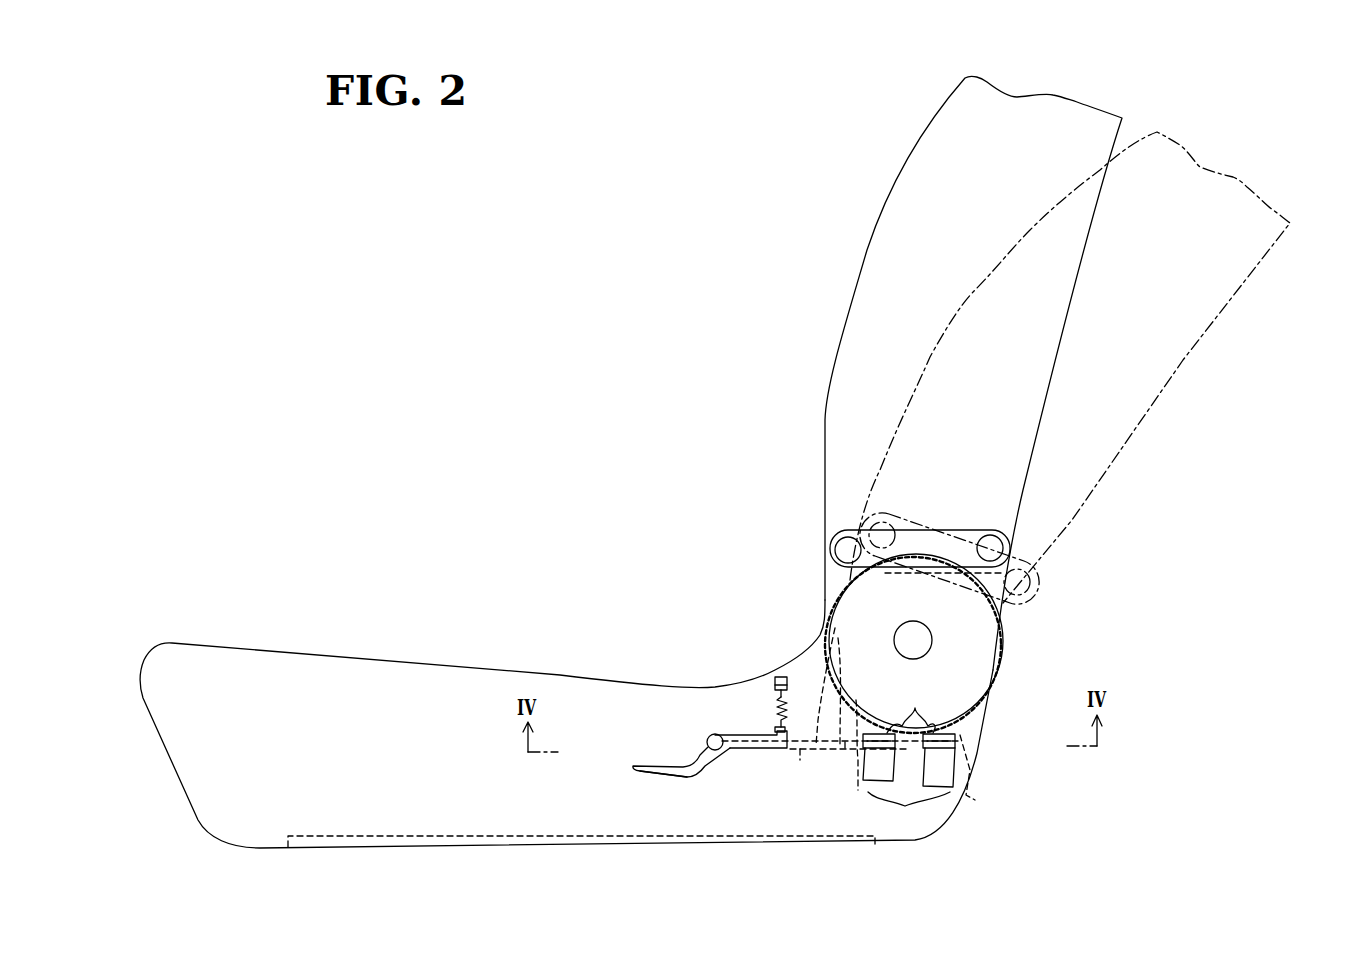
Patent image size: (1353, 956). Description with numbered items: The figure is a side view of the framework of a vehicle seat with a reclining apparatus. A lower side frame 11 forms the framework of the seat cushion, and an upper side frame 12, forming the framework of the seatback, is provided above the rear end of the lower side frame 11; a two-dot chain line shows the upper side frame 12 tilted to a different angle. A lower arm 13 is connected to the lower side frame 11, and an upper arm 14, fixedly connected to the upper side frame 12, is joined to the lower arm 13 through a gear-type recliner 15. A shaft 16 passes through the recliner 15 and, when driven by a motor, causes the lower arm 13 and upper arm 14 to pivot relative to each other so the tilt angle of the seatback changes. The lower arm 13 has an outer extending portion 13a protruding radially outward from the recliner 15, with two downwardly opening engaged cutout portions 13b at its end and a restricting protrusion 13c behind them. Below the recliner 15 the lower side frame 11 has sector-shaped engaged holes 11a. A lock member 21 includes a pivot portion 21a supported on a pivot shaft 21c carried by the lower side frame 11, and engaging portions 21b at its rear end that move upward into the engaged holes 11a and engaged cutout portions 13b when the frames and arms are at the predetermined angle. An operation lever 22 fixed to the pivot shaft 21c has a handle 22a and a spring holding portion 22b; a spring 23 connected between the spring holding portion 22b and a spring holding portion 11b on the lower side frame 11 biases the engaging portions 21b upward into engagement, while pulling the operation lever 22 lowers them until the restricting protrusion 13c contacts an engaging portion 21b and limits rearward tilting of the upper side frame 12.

The lower side frame 11 is at (446, 679).
The engaged hole 11a is at (909, 782).
The spring holding portion 11b is at (780, 677).
The upper side frame 12 is at (890, 206).
The lower arm 13 is at (812, 672).
The outer extending portion 13a is at (823, 751).
The engaged cutout portion 13b is at (869, 734).
The restricting protrusion 13c is at (972, 801).
The upper arm 14 is at (966, 531).
The recliner 15 is at (1028, 610).
The shaft 16 is at (910, 626).
The lock member 21 is at (795, 752).
The pivot portion 21a is at (805, 753).
The engaging portion 21b is at (915, 709).
The pivot shaft 21c is at (710, 736).
The operation lever 22 is at (684, 767).
The handle 22a is at (669, 779).
The spring holding portion 22b is at (752, 735).
The spring 23 is at (777, 699).